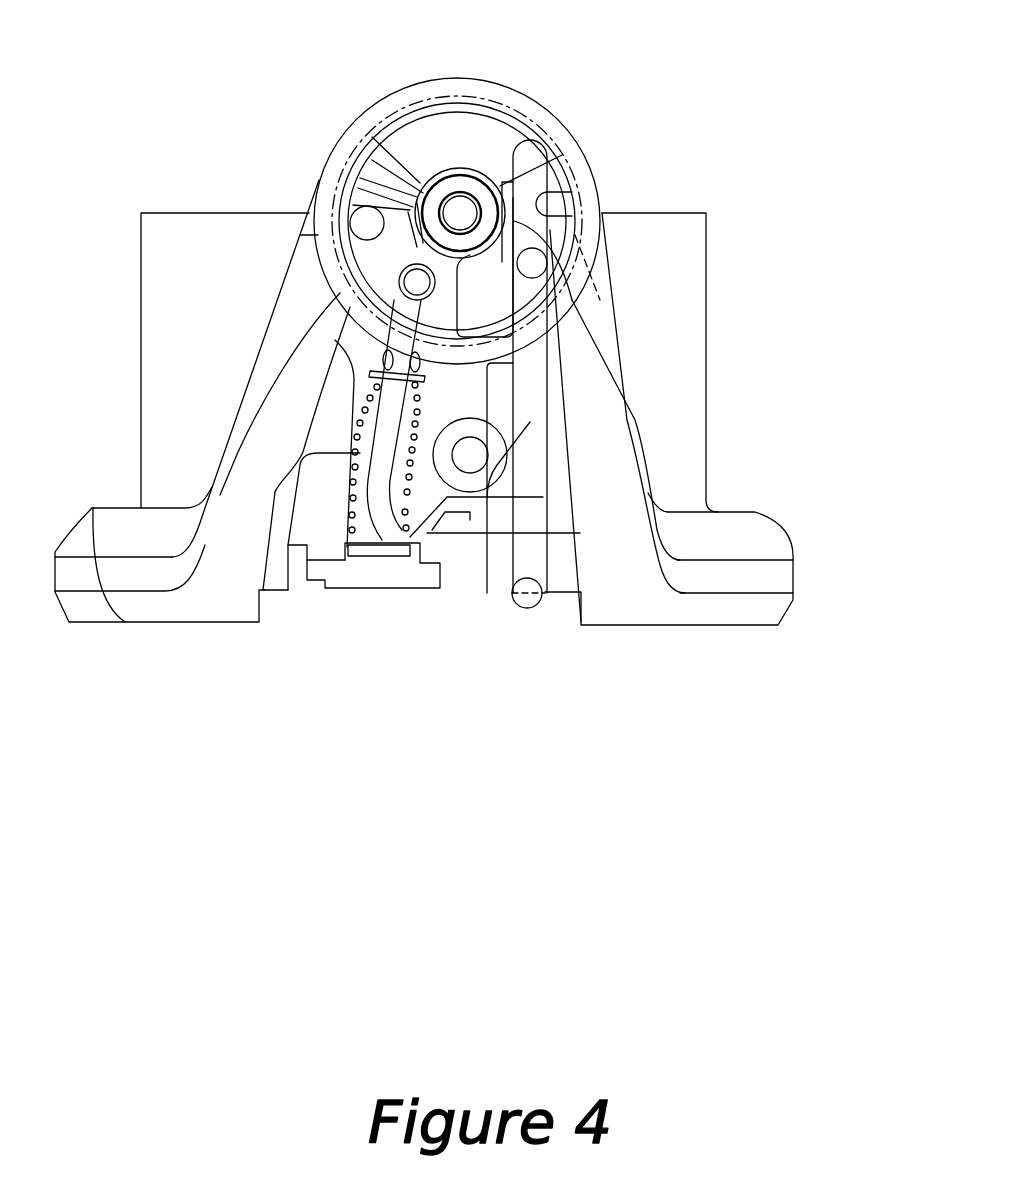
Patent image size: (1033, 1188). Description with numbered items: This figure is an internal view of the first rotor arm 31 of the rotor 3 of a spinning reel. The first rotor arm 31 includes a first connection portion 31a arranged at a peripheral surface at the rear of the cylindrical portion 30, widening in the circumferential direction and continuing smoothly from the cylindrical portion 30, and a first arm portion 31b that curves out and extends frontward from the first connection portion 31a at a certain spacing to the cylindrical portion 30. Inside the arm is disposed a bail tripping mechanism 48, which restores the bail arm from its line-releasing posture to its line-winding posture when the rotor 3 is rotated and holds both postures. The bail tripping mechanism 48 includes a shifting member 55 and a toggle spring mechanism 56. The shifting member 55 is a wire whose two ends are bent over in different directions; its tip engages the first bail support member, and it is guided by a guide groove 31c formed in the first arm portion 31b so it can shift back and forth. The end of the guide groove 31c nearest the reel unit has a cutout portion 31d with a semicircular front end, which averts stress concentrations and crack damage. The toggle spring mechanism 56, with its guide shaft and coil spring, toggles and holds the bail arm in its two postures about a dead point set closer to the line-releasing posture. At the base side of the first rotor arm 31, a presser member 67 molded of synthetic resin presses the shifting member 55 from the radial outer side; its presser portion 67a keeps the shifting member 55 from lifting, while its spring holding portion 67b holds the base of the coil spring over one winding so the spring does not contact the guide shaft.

The rotor 3 is at (705, 115).
The cylindrical portion 30 is at (692, 273).
The first rotor arm 31 is at (481, 402).
The first connection portion 31a is at (633, 580).
The first arm portion 31b is at (602, 388).
The guide groove 31c is at (552, 222).
The cutout portion 31d is at (540, 600).
The bail tripping mechanism 48 is at (320, 410).
The shifting member 55 is at (478, 550).
The toggle spring mechanism 56 is at (377, 557).
The presser member 67 is at (434, 553).
The presser portion 67a is at (520, 567).
The spring holding portion 67b is at (370, 565).